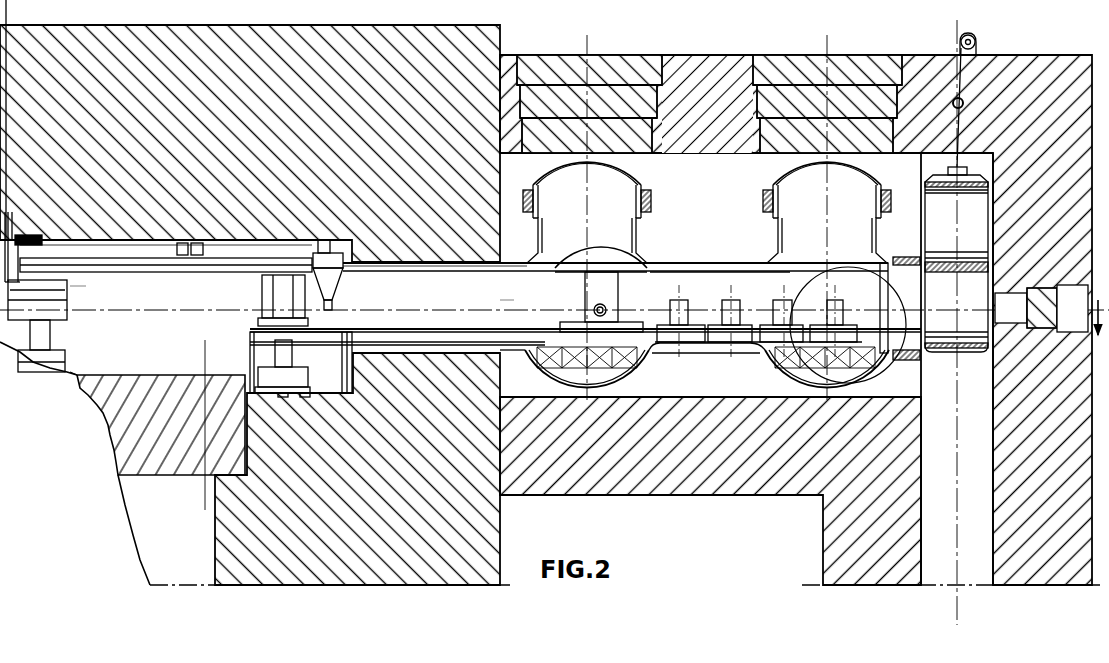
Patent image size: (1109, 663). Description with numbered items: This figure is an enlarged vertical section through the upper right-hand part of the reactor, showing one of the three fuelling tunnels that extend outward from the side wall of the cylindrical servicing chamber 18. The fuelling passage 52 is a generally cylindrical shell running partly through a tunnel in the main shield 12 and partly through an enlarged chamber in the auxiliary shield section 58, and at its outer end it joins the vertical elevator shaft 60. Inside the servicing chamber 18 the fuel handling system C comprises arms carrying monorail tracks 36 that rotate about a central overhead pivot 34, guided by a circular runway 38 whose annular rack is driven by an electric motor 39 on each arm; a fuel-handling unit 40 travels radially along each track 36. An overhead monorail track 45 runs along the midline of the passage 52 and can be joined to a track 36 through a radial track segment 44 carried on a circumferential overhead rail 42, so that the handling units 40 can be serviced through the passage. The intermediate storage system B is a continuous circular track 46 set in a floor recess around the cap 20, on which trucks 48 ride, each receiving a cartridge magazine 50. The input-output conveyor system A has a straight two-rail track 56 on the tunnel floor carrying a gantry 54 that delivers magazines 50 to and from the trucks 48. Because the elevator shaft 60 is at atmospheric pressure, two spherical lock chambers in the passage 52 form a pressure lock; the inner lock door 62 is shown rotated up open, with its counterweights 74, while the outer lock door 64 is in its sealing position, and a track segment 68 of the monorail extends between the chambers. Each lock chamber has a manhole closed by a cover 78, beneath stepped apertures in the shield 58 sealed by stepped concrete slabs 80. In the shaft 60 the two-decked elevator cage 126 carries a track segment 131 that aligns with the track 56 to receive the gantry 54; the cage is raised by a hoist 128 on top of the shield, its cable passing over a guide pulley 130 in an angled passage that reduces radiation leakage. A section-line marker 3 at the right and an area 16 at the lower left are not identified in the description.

The main shield 12 is at (250, 131).
The floor line 16 is at (625, 548).
The servicing chamber 18 is at (90, 360).
The cap 20 is at (152, 378).
The central overhead pivot 34 is at (36, 244).
The monorail track 36 is at (140, 262).
The circular runway 38 is at (177, 248).
The electric motor 39 is at (203, 249).
The fuel-handling unit 40 is at (37, 326).
The circumferential overhead rail 42 is at (318, 247).
The radial track segment 44 is at (343, 276).
The overhead monorail track 45 is at (440, 272).
The continuous circular track 46 is at (283, 397).
The truck 48 is at (306, 397).
The cartridge magazine 50 is at (295, 372).
The fuelling passage 52 is at (691, 348).
The gantry 54 is at (262, 306).
The two-rail track 56 is at (410, 331).
The auxiliary shield section 58 is at (796, 320).
The elevator shaft 60 is at (943, 369).
The lock door 62 is at (612, 257).
The lock door 64 is at (888, 295).
The track segment 68 is at (736, 267).
The counterweights 74 is at (573, 322).
The cover 78 is at (646, 190).
The stepped concrete slabs 80 is at (621, 60).
The elevator cage 126 is at (956, 259).
The hoist 128 is at (976, 40).
The guide pulley 130 is at (963, 103).
The track segment 131 is at (956, 329).
The section line 3 is at (1097, 329).
The input-output conveyor system A is at (507, 292).
The intermediate storage system B is at (243, 353).
The fuel handling system C is at (86, 287).